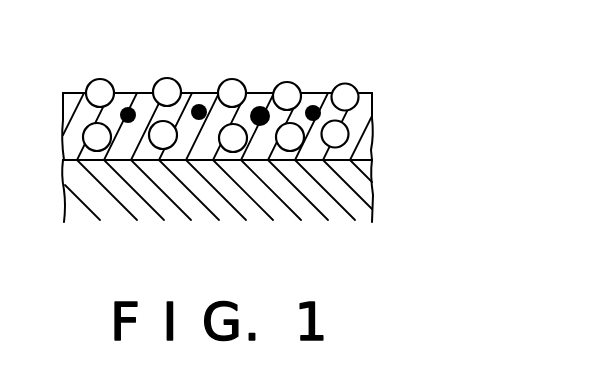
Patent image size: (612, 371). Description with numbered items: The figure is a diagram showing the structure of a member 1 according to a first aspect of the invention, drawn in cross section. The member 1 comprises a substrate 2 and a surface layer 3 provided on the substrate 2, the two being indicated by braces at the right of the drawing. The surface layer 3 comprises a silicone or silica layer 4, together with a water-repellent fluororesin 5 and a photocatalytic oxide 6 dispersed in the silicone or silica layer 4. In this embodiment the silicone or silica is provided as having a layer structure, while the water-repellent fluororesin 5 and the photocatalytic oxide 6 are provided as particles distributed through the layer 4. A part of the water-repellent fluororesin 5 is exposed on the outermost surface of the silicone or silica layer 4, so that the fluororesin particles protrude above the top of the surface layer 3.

The member 1 is at (326, 127).
The substrate 2 is at (373, 195).
The surface layer 3 is at (291, 89).
The silicone or silica layer 4 is at (372, 132).
The water-repellent fluororesin 5 is at (345, 84).
The photocatalytic oxide 6 is at (313, 105).